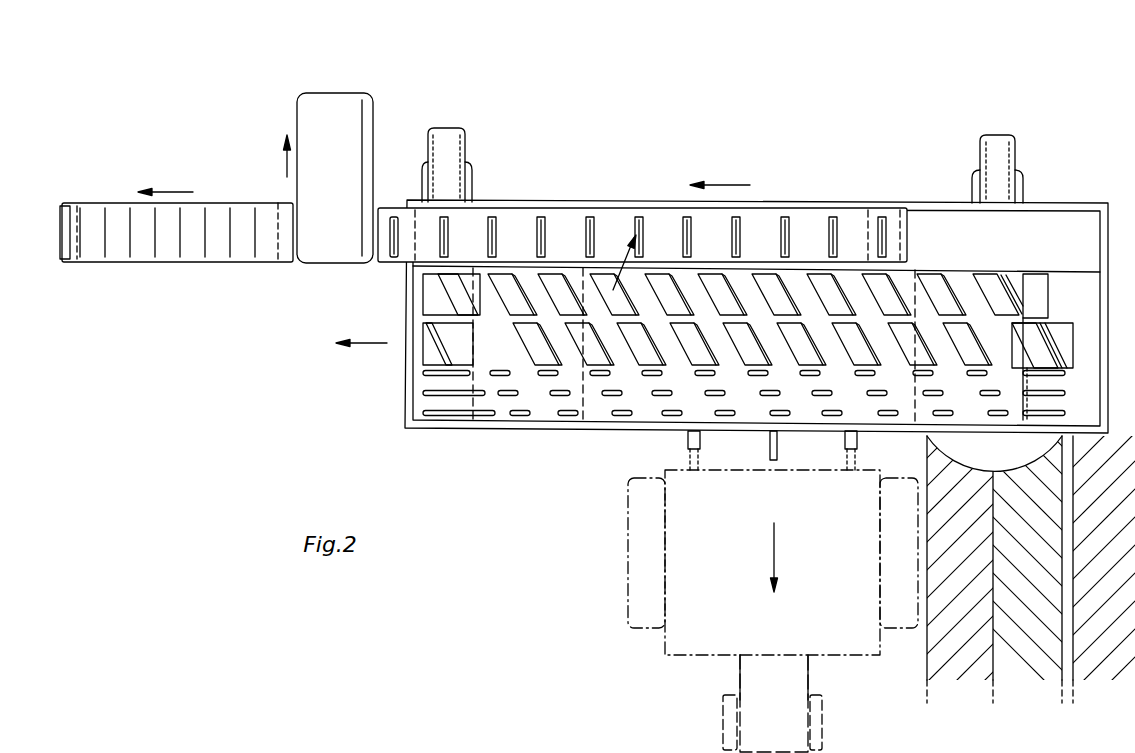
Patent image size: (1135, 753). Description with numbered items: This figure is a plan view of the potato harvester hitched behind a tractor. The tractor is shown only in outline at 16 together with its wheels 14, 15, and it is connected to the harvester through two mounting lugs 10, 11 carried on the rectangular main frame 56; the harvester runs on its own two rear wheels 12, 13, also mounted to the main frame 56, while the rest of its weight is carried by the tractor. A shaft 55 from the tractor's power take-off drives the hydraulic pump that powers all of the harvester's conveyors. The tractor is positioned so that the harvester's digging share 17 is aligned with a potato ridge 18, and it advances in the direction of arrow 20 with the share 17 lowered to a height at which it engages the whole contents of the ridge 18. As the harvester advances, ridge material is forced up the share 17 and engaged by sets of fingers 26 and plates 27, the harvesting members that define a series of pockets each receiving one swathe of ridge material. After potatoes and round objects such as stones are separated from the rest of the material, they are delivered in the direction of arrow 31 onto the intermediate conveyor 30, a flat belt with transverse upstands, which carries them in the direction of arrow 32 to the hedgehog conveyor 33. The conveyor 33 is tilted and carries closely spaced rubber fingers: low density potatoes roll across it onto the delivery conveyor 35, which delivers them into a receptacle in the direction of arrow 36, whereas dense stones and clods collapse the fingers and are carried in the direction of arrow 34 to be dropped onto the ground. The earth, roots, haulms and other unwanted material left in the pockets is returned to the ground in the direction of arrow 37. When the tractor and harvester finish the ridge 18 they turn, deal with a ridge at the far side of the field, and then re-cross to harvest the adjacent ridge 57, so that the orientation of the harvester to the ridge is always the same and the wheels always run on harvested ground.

The mounting lug 10 is at (692, 450).
The mounting lug 11 is at (846, 450).
The rear wheel 12 is at (450, 156).
The rear wheel 13 is at (992, 162).
The tractor wheel 14 is at (636, 553).
The tractor wheel 15 is at (900, 553).
The tractor 16 is at (708, 626).
The digging share 17 is at (945, 441).
The potato ridge 18 is at (992, 650).
The direction of advance arrow 20 is at (776, 541).
The fingers 26 is at (620, 413).
The plates 27 is at (975, 295).
The intermediate conveyor 30 is at (405, 222).
The delivery direction arrow 31 is at (620, 262).
The intermediate conveyor direction arrow 32 is at (721, 185).
The hedgehog conveyor 33 is at (335, 112).
The stone discharge direction arrow 34 is at (285, 163).
The delivery conveyor 35 is at (172, 262).
The potato delivery direction arrow 36 is at (173, 192).
The waste return direction arrow 37 is at (370, 343).
The shaft 55 is at (770, 452).
The main frame 56 is at (1066, 203).
The adjacent potato ridge 57 is at (1063, 655).